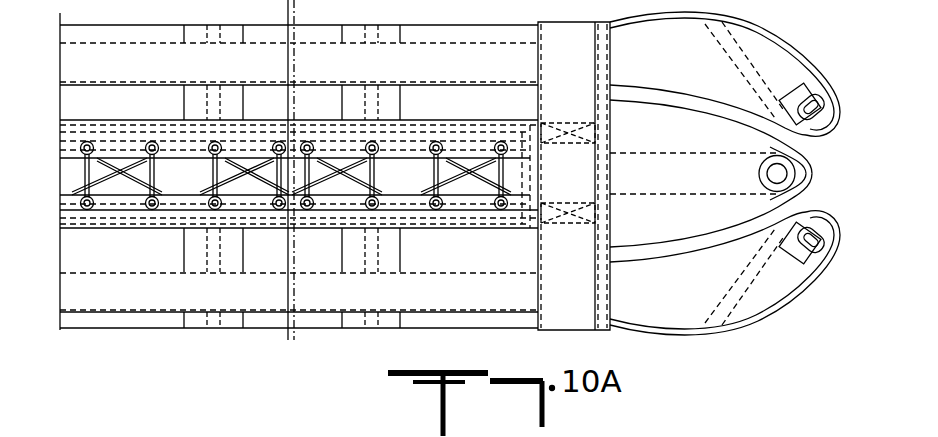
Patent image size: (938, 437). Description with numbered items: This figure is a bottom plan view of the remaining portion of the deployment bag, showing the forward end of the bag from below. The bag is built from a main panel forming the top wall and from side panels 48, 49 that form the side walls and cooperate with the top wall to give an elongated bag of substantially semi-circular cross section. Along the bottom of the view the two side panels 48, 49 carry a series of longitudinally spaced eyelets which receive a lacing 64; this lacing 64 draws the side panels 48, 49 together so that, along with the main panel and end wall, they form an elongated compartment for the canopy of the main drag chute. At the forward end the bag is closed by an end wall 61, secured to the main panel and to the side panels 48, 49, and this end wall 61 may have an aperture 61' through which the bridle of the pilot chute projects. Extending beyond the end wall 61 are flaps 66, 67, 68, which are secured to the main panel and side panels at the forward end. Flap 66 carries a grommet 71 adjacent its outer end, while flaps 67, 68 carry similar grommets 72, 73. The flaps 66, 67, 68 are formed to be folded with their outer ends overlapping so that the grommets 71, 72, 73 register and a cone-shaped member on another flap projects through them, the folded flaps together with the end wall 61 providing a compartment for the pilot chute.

The side panel 48 is at (482, 111).
The side panel 49 is at (482, 259).
The end wall 61 is at (574, 176).
The aperture 61' is at (569, 176).
The lacing 64 is at (432, 172).
The flap 66 is at (752, 24).
The flap 67 is at (696, 229).
The flap 68 is at (777, 306).
The grommet 71 is at (810, 92).
The grommet 72 is at (759, 174).
The grommet 73 is at (800, 250).